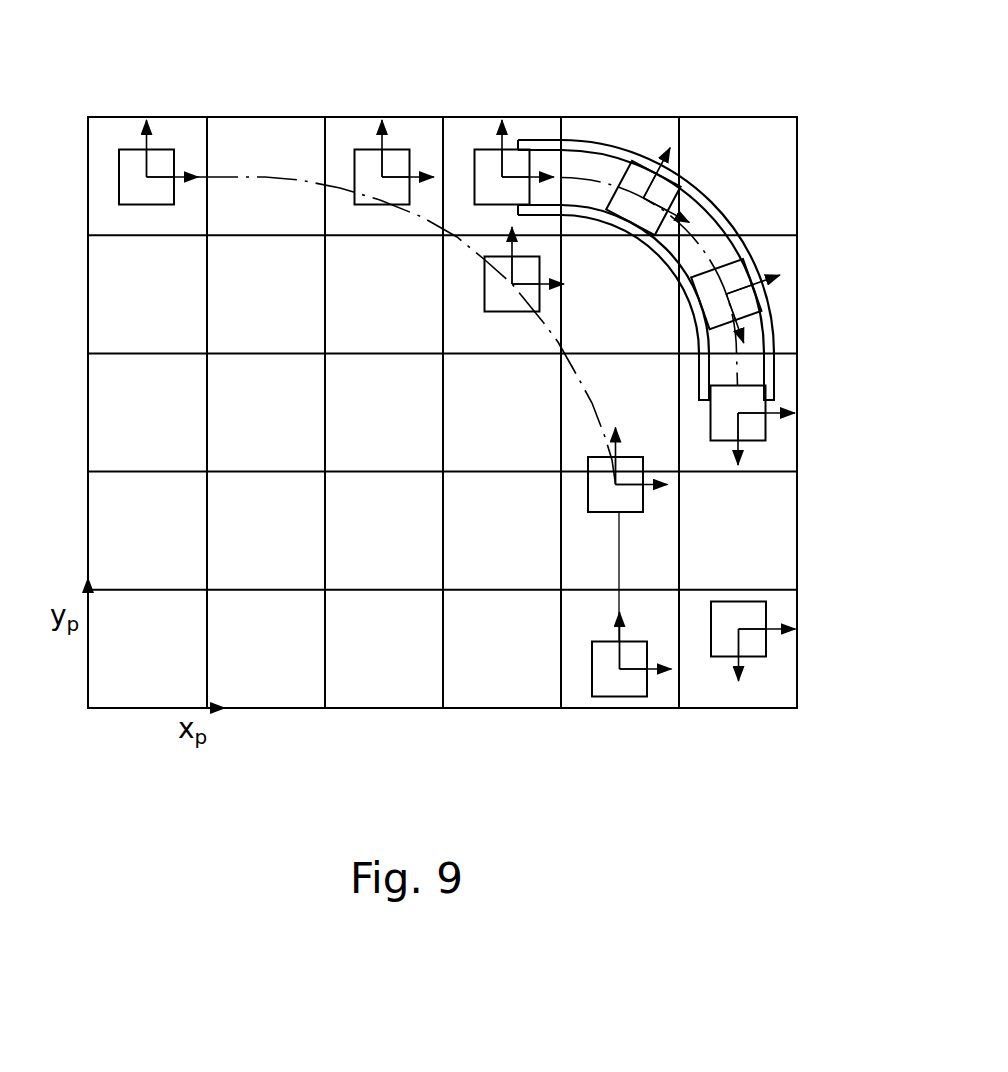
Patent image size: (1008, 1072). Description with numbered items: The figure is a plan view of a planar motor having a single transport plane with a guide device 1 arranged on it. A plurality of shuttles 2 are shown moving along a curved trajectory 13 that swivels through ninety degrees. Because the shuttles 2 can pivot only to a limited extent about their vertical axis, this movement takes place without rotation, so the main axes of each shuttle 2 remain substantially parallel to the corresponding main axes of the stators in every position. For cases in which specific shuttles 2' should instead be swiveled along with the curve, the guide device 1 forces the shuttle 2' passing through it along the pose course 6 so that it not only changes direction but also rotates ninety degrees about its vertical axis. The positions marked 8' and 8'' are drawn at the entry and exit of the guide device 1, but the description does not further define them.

The guide device 1 is at (738, 237).
The shuttle 2 is at (388, 420).
The shuttle 2' is at (600, 374).
The pose course 6 is at (585, 178).
The track entry transition 8' is at (513, 126).
The track exit transition 8'' is at (790, 405).
The curved trajectory 13 is at (422, 217).